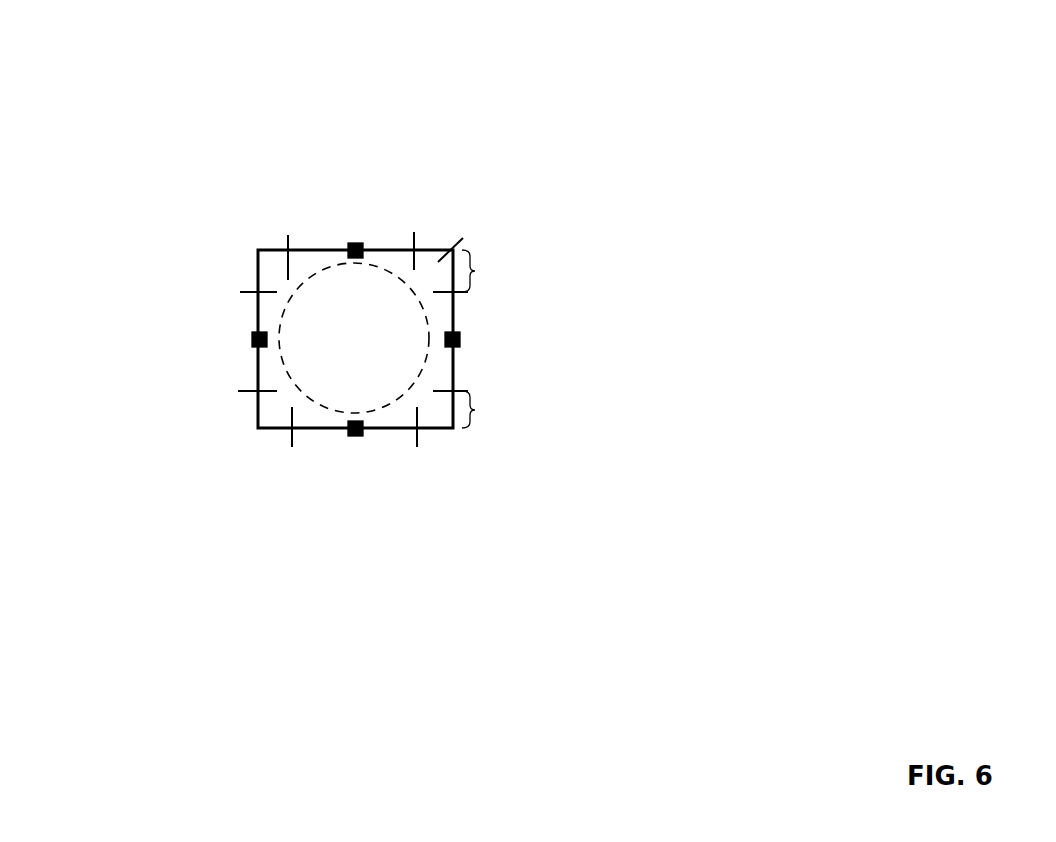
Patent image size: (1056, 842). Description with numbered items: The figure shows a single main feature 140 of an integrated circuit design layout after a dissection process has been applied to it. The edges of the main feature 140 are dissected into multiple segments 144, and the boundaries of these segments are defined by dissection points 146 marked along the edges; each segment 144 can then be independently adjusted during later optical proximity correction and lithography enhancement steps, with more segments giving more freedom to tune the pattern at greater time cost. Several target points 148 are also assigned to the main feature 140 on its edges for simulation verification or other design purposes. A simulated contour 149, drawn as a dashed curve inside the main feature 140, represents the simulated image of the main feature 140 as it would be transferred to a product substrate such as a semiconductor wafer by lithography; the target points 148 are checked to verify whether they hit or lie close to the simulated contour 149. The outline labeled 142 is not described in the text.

The main feature 140 is at (709, 115).
The square frame outline 142 is at (457, 371).
The segments 144 is at (488, 339).
The dissection points 146 is at (290, 232).
The target points 148 is at (356, 243).
The simulated contour 149 is at (382, 271).